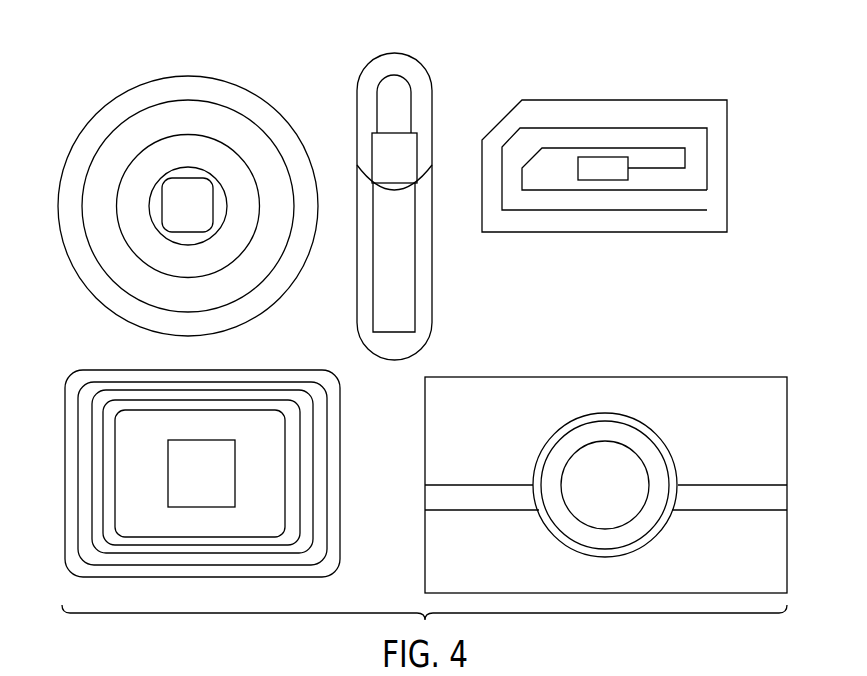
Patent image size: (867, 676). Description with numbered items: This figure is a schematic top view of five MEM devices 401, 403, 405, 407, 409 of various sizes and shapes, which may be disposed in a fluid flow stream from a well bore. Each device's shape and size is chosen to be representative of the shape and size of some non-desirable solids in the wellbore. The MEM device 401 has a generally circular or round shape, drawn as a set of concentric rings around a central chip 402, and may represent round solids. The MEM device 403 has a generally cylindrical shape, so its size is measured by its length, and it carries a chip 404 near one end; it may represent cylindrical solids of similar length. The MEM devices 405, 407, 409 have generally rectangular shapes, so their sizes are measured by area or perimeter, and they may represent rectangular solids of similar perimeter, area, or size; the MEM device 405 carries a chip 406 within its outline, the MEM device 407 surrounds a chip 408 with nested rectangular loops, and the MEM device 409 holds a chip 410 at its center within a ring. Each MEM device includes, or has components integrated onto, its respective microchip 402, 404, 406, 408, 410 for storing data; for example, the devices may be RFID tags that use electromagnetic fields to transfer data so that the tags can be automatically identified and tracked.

The MEM device 401 is at (130, 87).
The chip 402 is at (214, 207).
The MEM device 403 is at (420, 63).
The chip 404 is at (418, 158).
The MEM device 405 is at (662, 100).
The chip 406 is at (603, 157).
The MEM device 407 is at (287, 370).
The chip 408 is at (168, 473).
The MEM device 409 is at (745, 377).
The chip 410 is at (562, 485).